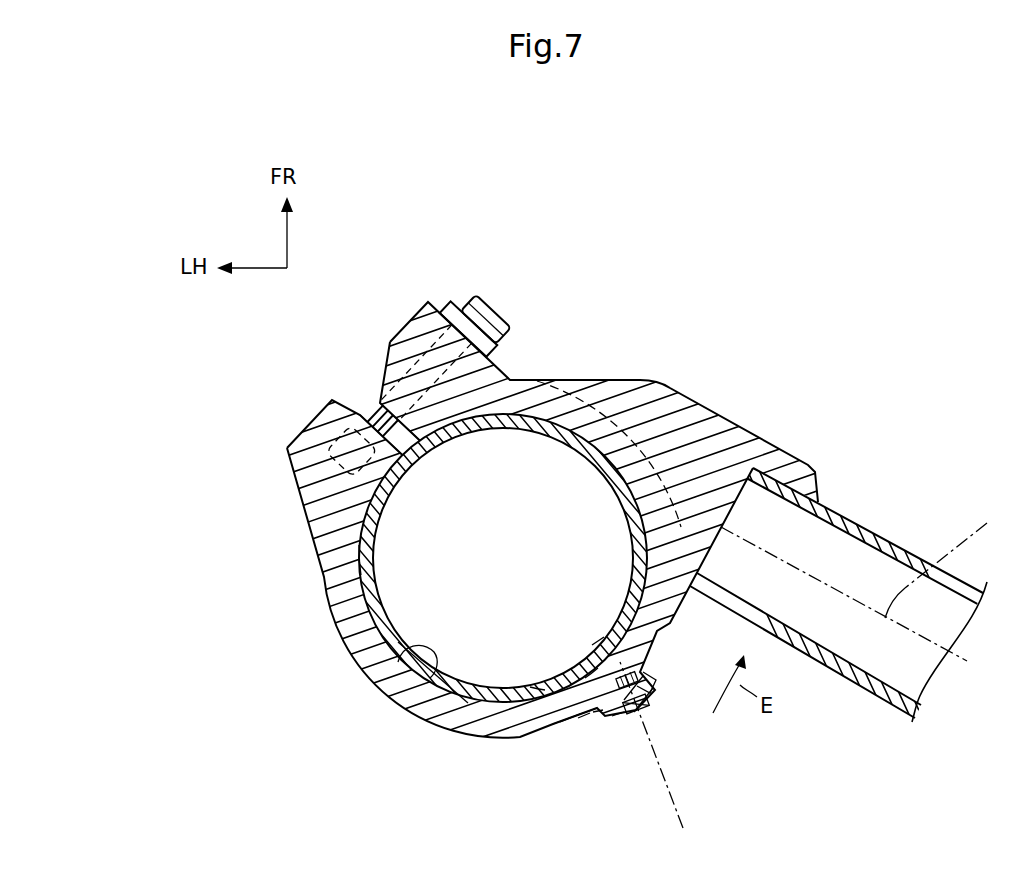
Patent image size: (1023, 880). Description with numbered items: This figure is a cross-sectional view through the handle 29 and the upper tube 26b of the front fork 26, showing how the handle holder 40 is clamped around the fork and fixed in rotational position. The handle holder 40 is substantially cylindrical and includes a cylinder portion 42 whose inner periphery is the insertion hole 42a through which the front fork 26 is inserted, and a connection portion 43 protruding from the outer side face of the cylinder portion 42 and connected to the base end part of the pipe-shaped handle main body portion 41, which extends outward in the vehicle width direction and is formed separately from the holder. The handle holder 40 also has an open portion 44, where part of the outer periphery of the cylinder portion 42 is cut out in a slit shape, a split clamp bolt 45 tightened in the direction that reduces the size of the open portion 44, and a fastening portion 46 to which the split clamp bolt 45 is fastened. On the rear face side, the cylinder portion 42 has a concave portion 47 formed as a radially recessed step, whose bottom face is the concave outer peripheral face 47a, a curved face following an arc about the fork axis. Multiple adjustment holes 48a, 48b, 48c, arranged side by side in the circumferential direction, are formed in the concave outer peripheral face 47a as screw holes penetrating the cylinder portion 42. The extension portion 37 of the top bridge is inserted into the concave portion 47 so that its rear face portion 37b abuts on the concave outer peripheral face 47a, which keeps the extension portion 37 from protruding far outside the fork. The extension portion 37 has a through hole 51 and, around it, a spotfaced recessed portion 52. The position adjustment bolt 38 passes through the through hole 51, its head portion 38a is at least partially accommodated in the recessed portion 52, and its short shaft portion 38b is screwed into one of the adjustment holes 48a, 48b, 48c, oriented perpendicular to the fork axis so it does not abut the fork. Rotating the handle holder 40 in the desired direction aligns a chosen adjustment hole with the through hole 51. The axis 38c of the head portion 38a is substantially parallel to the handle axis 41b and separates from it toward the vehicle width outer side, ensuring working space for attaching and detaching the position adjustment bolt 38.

The front fork 26 is at (387, 585).
The upper tube 26b is at (357, 557).
The handle 29 is at (617, 328).
The extension portion 37 is at (649, 683).
The rear face portion 37b is at (553, 708).
The position adjustment bolt 38 is at (642, 717).
The head portion 38a is at (648, 708).
The shaft portion 38b is at (640, 675).
The axis 38c is at (665, 760).
The handle holder 40 is at (334, 651).
The handle main body portion 41 is at (860, 523).
The handle axis 41b is at (976, 539).
The cylinder portion 42 is at (398, 662).
The insertion hole 42a is at (487, 698).
The connection portion 43 is at (723, 413).
The open portion 44 is at (397, 453).
The split clamp bolt 45 is at (480, 305).
The fastening portion 46 is at (317, 413).
The concave portion 47 is at (568, 738).
The concave outer peripheral face 47a is at (583, 720).
The adjustment hole 48a is at (535, 687).
The adjustment hole 48b is at (590, 673).
The adjustment hole 48c is at (598, 640).
The through hole 51 is at (597, 710).
The recessed portion 52 is at (617, 713).